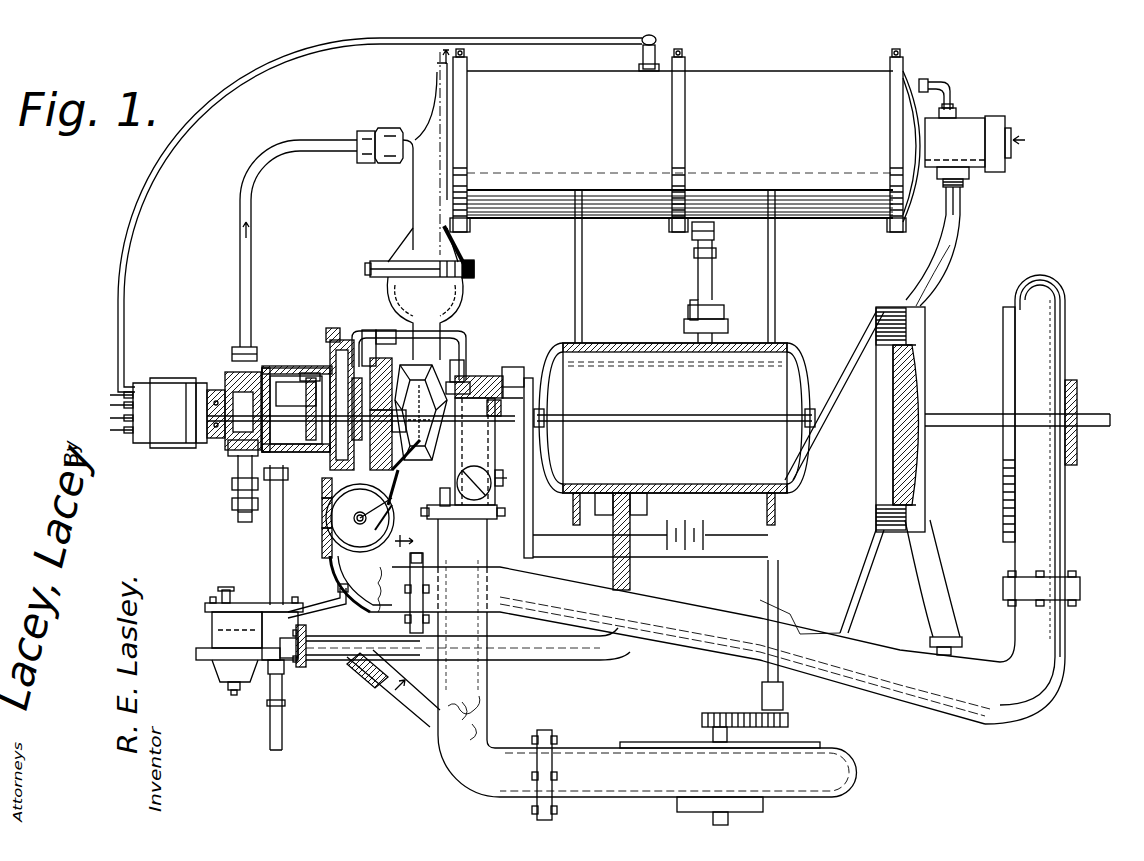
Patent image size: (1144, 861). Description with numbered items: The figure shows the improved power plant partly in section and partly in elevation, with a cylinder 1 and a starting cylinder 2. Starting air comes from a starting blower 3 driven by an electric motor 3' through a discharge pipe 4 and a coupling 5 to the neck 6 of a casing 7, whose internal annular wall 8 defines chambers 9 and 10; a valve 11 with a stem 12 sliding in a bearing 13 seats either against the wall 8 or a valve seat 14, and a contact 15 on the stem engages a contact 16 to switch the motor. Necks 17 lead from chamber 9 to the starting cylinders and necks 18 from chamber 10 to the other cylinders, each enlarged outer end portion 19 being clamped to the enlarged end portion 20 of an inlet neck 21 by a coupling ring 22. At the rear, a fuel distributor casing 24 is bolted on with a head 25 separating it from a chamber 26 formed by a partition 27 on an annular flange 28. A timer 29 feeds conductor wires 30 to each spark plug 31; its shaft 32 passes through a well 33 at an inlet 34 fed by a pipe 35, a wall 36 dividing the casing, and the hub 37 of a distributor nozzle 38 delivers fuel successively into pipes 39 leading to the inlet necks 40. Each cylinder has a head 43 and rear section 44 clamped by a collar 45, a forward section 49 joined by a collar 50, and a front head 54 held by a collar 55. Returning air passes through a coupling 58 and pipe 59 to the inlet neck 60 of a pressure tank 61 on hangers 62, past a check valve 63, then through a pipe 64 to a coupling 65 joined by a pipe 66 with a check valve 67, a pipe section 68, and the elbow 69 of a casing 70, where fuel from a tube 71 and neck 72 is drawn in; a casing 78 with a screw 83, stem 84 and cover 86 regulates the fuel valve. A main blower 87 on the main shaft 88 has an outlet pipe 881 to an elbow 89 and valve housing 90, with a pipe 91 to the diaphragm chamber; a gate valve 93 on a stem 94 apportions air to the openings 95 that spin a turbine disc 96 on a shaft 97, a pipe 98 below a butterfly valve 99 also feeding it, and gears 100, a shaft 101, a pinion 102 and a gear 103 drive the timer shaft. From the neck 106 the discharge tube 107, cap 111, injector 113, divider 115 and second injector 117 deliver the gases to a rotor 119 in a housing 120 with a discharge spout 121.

The cylinder 1 is at (750, 76).
The starting cylinder 2 is at (421, 304).
The starting fan or blower 3 is at (676, 762).
The electric motor 3' is at (745, 651).
The discharge pipe 4 is at (490, 688).
The coupling 5 is at (966, 197).
The neck 6 is at (492, 450).
The housing or casing 7 is at (465, 368).
The internal annular wall 8 is at (390, 342).
The chamber 9 is at (470, 384).
The chamber 10 is at (390, 422).
The valve 11 is at (464, 392).
The stem 12 is at (442, 408).
The bearing 13 is at (492, 430).
The valve seat 14 is at (436, 436).
The contact 15 is at (536, 380).
The contact 16 is at (518, 372).
The necks or outlet pipes 17 is at (446, 500).
The necks or pipes 18 is at (445, 345).
The enlarged outer end portion 19 is at (476, 283).
The enlarged end portion 20 is at (410, 248).
The inlet neck 21 is at (418, 216).
The coupling ring 22 is at (466, 268).
The fuel distributor casing 24 is at (292, 358).
The head 25 is at (340, 340).
The chamber 26 is at (352, 520).
The partition 27 is at (384, 384).
The annular flange 28 is at (326, 330).
The timer 29 is at (172, 398).
The conductor wires 30 is at (124, 300).
The spark plug 31 is at (658, 50).
The shaft 32 is at (215, 436).
The well 33 is at (296, 392).
The inlet 34 is at (268, 484).
The pipe 35 is at (270, 550).
The wall 36 is at (275, 366).
The hub 37 is at (232, 452).
The distributor nozzle 38 is at (240, 392).
The pipes or tubes 39 is at (253, 250).
The inlet neck 40 is at (387, 128).
The head 43 is at (425, 98).
The rear section 44 is at (567, 80).
The clamping ring or collar 45 is at (465, 120).
The forward section 49 is at (820, 80).
The clamping ring or collar 50 is at (688, 116).
The head 54 is at (912, 127).
The clamping ring or collar 55 is at (892, 103).
The coupling 58 is at (714, 232).
The pipe 59 is at (713, 278).
The inlet neck 60 is at (724, 320).
The pressure tank 61 is at (634, 343).
The hangers 62 is at (584, 266).
The check valve 63 is at (690, 318).
The pipe 64 is at (632, 575).
The coupling 65 is at (372, 640).
The pipe 66 is at (420, 726).
The check valve 67 is at (362, 678).
The pipe section 68 is at (348, 640).
The elbow 69 is at (298, 662).
The casing 70 is at (322, 592).
The tube 71 is at (275, 718).
The depending neck or hollow arm 72 is at (270, 672).
The casing 78 is at (222, 622).
The screw 83 is at (232, 692).
The stem 84 is at (222, 592).
The cover 86 is at (276, 603).
The fan or blower 87 is at (1052, 348).
The main shaft 88 is at (1097, 414).
The elbow 89 is at (338, 594).
The valve housing 90 is at (328, 578).
The pipe 91 is at (344, 592).
The gate valve 93 is at (380, 545).
The stem 94 is at (360, 524).
The openings 95 is at (368, 332).
The turbine disc 96 is at (376, 449).
The shaft 97 is at (353, 409).
The pipe 98 is at (470, 340).
The butterfly valve 99 is at (495, 480).
The gear 100 is at (322, 540).
The shaft 101 is at (316, 499).
The pinion 102 is at (322, 560).
The gear 103 is at (304, 373).
The neck 106 is at (970, 130).
The discharge tube 107 is at (950, 86).
The cap 111 is at (1002, 136).
The injector 113 is at (956, 113).
The divider 115 is at (944, 212).
The injector 117 is at (965, 249).
The rotor 119 is at (921, 372).
The housing 120 is at (893, 308).
The discharge spout 121 is at (862, 398).
The outlet pipe 881 is at (824, 676).